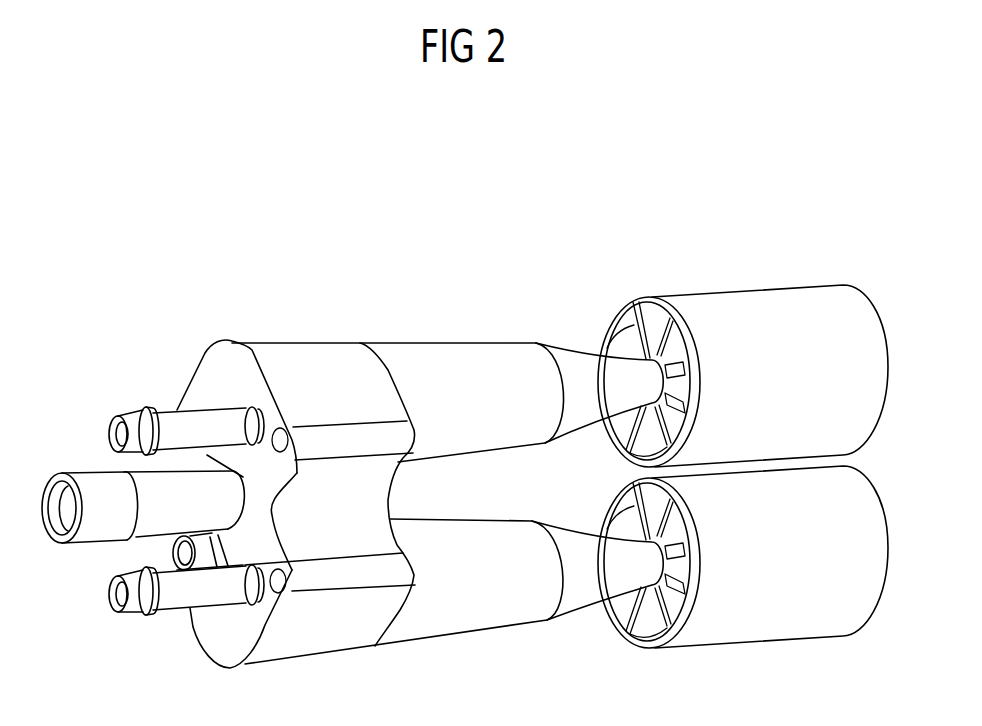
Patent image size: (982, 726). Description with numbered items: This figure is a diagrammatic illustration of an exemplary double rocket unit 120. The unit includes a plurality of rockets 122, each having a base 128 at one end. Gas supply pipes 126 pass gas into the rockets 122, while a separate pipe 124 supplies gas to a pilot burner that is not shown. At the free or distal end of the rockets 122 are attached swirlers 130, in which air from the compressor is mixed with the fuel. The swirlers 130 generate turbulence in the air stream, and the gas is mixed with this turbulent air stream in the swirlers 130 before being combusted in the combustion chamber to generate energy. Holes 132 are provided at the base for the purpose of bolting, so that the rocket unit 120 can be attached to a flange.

The double rocket unit 120 is at (296, 160).
The rockets 122 is at (415, 358).
The pipe 124 is at (87, 487).
The gas supply pipes 126 is at (162, 425).
The base 128 is at (213, 362).
The swirlers 130 is at (708, 306).
The holes 132 is at (282, 443).